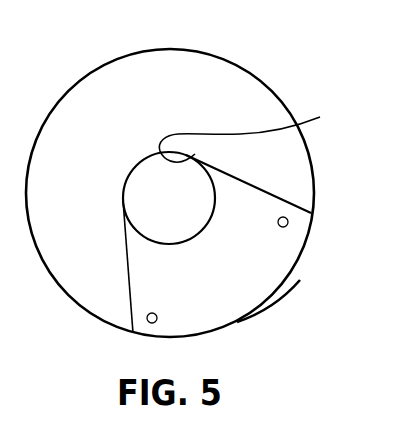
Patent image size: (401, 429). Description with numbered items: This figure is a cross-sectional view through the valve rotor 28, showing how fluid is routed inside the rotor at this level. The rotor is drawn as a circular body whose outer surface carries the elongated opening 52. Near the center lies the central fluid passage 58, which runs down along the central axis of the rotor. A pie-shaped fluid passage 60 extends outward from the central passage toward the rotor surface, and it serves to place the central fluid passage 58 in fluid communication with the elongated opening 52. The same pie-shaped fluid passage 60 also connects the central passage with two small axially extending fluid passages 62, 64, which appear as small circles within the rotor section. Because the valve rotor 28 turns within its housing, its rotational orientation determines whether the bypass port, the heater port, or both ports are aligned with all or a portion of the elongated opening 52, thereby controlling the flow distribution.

The valve rotor 28 is at (257, 69).
The elongated opening 52 is at (237, 322).
The central fluid passage 58 is at (258, 124).
The pie-shaped fluid passage 60 is at (262, 201).
The small axially extending fluid passage 62 is at (143, 313).
The small axially extending fluid passage 64 is at (277, 227).